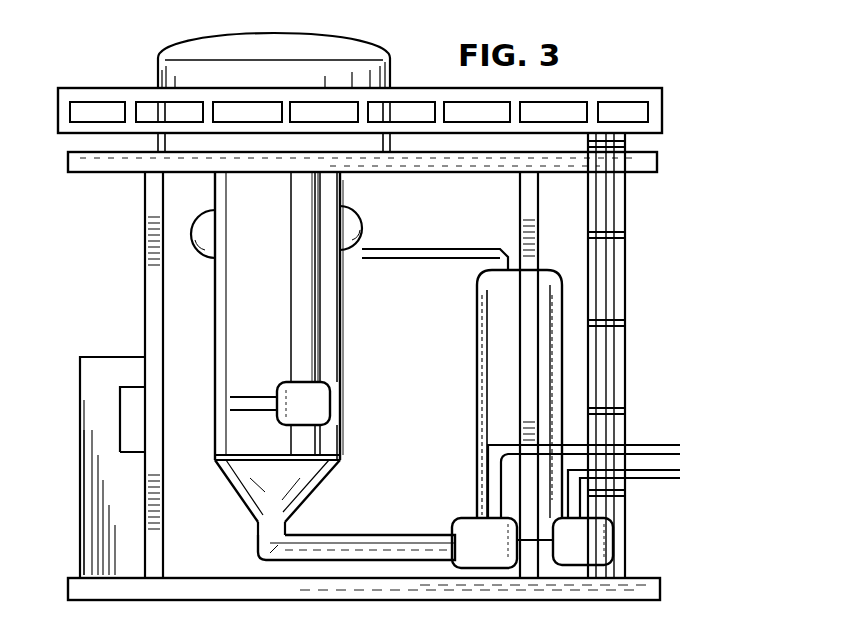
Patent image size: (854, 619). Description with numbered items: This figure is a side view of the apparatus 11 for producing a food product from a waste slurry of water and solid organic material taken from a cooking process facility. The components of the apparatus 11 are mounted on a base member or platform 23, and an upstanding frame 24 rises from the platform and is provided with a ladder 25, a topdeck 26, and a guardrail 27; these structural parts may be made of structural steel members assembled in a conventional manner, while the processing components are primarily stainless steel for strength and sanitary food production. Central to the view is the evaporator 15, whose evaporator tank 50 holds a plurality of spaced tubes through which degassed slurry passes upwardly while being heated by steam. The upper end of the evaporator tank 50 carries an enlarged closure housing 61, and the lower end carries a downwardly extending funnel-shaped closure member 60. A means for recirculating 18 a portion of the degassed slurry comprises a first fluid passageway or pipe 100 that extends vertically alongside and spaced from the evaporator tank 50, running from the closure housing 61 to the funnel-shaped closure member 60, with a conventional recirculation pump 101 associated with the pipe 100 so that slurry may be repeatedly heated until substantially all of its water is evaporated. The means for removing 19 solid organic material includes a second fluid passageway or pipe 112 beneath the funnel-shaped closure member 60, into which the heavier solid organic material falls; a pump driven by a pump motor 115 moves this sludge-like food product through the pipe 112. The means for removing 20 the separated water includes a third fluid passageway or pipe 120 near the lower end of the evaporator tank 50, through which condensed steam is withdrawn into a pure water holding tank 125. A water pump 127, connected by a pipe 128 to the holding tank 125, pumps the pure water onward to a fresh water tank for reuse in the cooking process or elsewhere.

The apparatus 11 is at (682, 103).
The evaporator 15 is at (228, 316).
The means for recirculating 18 is at (318, 290).
The means for removing solid organic material 19 is at (368, 487).
The means for removing separated water 20 is at (560, 276).
The base member 23 is at (660, 590).
The upstanding frame 24 is at (148, 267).
The ladder 25 is at (625, 208).
The topdeck 26 is at (650, 155).
The guardrail 27 is at (660, 108).
The evaporator tank 50 is at (380, 317).
The funnel-shaped closure member 60 is at (337, 477).
The closure housing 61 is at (345, 42).
The first fluid passageway 100 is at (318, 322).
The recirculation pump 101 is at (320, 400).
The second fluid passageway 112 is at (352, 535).
The pump motor 115 is at (463, 517).
The third fluid passageway 120 is at (412, 255).
The holding tank 125 is at (475, 383).
The water pump 127 is at (617, 560).
The pipe 128 is at (670, 468).